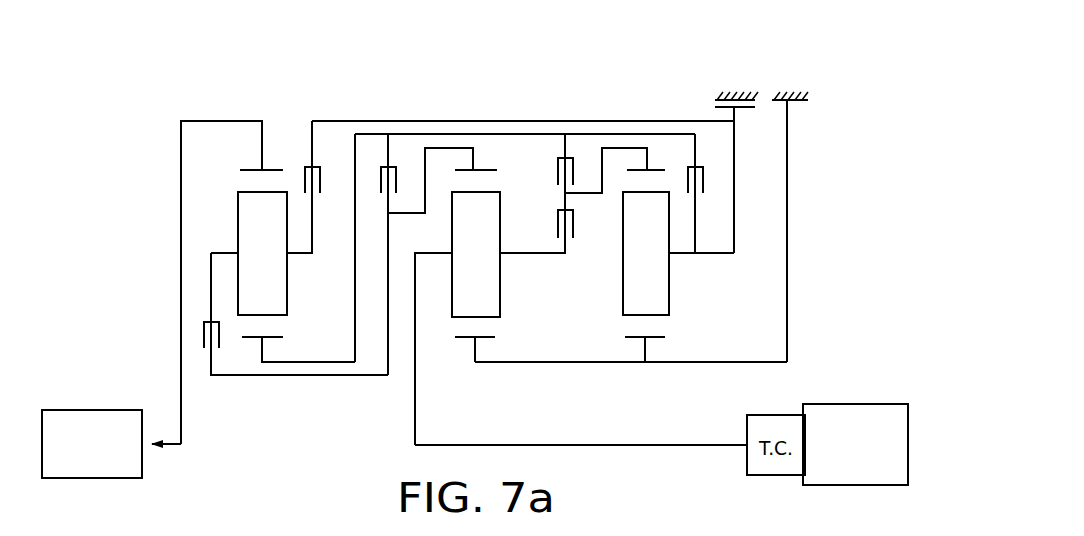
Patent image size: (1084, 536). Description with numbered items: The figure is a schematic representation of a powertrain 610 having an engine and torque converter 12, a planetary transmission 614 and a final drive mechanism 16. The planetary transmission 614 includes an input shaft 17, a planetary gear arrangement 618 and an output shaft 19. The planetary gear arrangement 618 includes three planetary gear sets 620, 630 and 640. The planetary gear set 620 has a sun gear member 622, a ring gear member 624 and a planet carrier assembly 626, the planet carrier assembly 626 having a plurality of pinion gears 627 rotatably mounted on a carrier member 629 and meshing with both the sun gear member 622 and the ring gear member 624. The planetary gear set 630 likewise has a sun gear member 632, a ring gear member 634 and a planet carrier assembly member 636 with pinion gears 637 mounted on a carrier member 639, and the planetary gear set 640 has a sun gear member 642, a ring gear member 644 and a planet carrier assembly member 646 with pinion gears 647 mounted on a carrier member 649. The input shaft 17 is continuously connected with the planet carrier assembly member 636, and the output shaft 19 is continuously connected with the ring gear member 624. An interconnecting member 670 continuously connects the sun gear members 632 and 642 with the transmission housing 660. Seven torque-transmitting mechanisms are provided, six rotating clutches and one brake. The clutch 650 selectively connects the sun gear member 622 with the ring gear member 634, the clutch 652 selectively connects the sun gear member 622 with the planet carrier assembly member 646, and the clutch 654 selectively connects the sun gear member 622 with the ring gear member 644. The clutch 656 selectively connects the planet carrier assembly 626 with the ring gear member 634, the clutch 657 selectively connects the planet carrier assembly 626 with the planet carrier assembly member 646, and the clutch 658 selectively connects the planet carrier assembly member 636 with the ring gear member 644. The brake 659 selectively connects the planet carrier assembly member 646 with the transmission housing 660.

The powertrain 610 is at (154, 198).
The planetary transmission 614 is at (419, 115).
The planetary gear arrangement 618 is at (564, 112).
The ring gear member 624 is at (253, 168).
The clutch 657 is at (305, 165).
The clutch 650 is at (385, 165).
The ring gear member 634 is at (470, 168).
The clutch 654 is at (555, 160).
The ring gear member 644 is at (637, 168).
The clutch 652 is at (690, 165).
The brake 659 is at (712, 99).
The transmission housing 660 is at (720, 96).
The clutch 656 is at (195, 330).
The pinion gears 627 is at (262, 253).
The carrier member 629 is at (303, 260).
The planet carrier assembly 626 is at (294, 264).
The pinion gears 637 is at (476, 254).
The carrier member 639 is at (518, 257).
The planet carrier assembly member 636 is at (509, 264).
The clutch 658 is at (577, 252).
The pinion gears 647 is at (646, 253).
The carrier member 649 is at (688, 256).
The planet carrier assembly member 646 is at (679, 264).
The planetary gear set 620 is at (251, 342).
The sun gear member 622 is at (265, 342).
The planetary gear set 630 is at (465, 342).
The sun gear member 632 is at (488, 342).
The interconnecting member 670 is at (557, 364).
The planetary gear set 640 is at (639, 342).
The sun gear member 642 is at (660, 342).
The final drive mechanism 16 is at (107, 396).
The output shaft 19 is at (172, 446).
The engine and torque converter 12 is at (837, 387).
The input shaft 17 is at (718, 447).